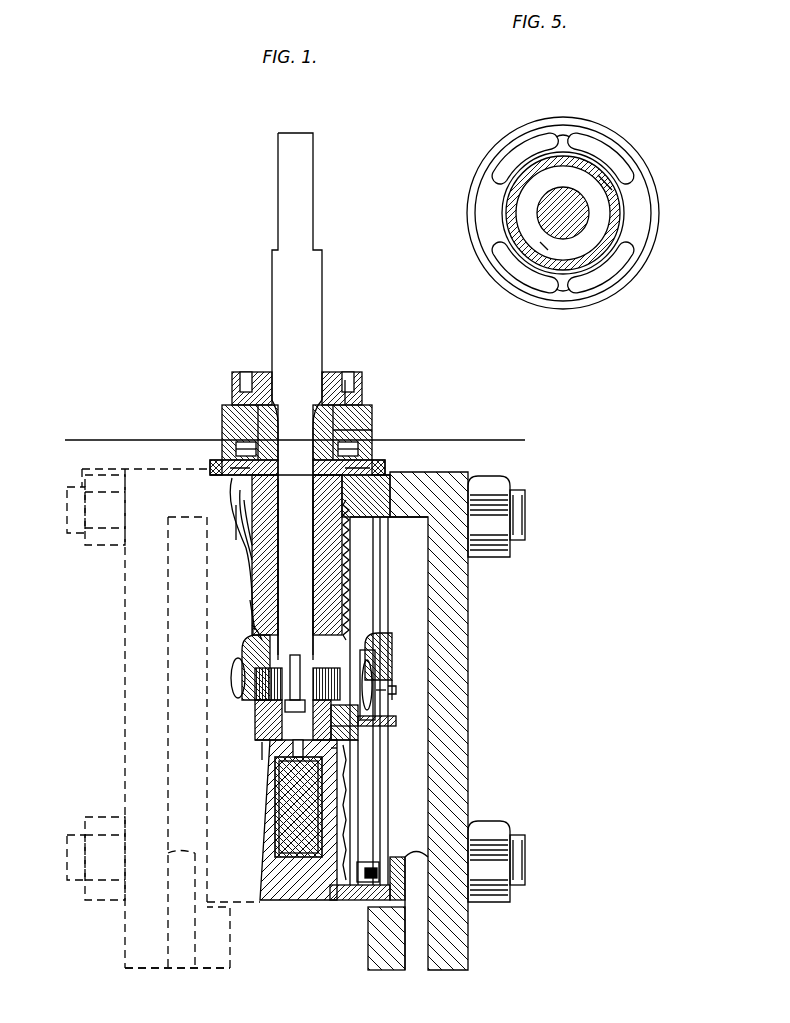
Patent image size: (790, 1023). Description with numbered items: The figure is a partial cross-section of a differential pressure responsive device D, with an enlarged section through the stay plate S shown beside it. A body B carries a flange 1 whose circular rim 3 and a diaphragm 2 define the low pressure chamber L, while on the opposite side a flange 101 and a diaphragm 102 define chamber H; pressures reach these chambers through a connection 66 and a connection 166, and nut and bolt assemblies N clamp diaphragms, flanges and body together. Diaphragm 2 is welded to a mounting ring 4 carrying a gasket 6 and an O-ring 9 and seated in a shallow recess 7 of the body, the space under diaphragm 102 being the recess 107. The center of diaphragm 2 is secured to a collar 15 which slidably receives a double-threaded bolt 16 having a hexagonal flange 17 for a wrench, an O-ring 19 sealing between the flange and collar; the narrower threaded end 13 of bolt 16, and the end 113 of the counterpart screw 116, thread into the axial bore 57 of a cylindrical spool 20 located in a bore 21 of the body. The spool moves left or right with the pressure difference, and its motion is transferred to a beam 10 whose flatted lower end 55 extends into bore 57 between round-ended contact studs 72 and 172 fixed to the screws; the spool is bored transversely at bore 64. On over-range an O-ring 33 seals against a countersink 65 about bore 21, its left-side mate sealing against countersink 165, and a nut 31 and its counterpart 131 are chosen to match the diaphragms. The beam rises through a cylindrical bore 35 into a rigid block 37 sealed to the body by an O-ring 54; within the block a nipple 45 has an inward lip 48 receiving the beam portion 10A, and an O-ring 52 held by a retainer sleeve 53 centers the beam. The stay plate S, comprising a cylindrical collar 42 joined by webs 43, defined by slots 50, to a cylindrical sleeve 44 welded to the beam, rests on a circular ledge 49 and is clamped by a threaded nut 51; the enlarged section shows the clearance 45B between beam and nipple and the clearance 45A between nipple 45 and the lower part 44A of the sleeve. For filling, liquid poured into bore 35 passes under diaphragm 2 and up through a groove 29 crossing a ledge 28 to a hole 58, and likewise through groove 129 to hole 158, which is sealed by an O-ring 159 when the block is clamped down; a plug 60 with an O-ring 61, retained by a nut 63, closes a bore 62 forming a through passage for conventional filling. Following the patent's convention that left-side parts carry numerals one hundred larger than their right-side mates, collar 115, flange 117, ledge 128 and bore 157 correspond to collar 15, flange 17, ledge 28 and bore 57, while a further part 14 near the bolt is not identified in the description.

In FIG. 1, the flange 1 is at (470, 630).
In FIG. 1, the diaphragm 2 is at (346, 580).
In FIG. 1, the rim 3 is at (418, 528).
In FIG. 1, the mounting ring 4 is at (378, 855).
In FIG. 1, the gasket 6 is at (385, 866).
In FIG. 1, the recess 7 is at (352, 600).
In FIG. 1, the O-ring 9 is at (365, 892).
In FIG. 1, the beam 10 is at (300, 277).
In FIG. 5, the beam portion 10A is at (545, 215).
In FIG. 1, the inner threaded end of bolt 13 is at (380, 714).
In FIG. 1, the ring 14 is at (403, 707).
In FIG. 1, the collar 15 is at (352, 722).
In FIG. 1, the double-threaded bolt 16 is at (392, 690).
In FIG. 1, the hexagonal flange 17 is at (374, 690).
In FIG. 1, the O-ring 19 is at (345, 632).
In FIG. 1, the spool 20 is at (258, 736).
In FIG. 1, the bore 21 is at (297, 807).
In FIG. 1, the ledge 28 is at (382, 527).
In FIG. 1, the groove 29 is at (328, 932).
In FIG. 1, the nut 31 is at (385, 650).
In FIG. 1, the O-ring 33 is at (383, 812).
In FIG. 1, the cylindrical bore 35 is at (282, 542).
In FIG. 1, the rigid block 37 is at (365, 432).
In FIG. 1, the cylindrical collar 42 is at (380, 460).
In FIG. 5, the cylindrical collar 42 is at (488, 166).
In FIG. 5, the webs 43 is at (565, 136).
In FIG. 1, the cylindrical sleeve 44 is at (378, 448).
In FIG. 5, the cylindrical lower part of sleeve 44A is at (612, 241).
In FIG. 1, the nipple 45 is at (232, 415).
In FIG. 5, the nipple 45 is at (601, 200).
In FIG. 5, the spacing between nipple and sleeve 45A is at (594, 172).
In FIG. 5, the spacing between beam and nipple 45B is at (548, 241).
In FIG. 1, the lip 48 is at (335, 378).
In FIG. 1, the circular ledge 49 is at (243, 462).
In FIG. 1, the slots 50 is at (240, 450).
In FIG. 5, the slots 50 is at (501, 152).
In FIG. 1, the threaded nut 51 is at (352, 396).
In FIG. 1, the O-ring 52 is at (258, 395).
In FIG. 1, the retainer sleeve 53 is at (292, 400).
In FIG. 1, the O-ring 54 is at (318, 490).
In FIG. 1, the flatted lower end of beam 55 is at (298, 655).
In FIG. 1, the axial end bore 57 is at (392, 468).
In FIG. 1, the hole 58 is at (400, 474).
In FIG. 1, the plug 60 is at (298, 807).
In FIG. 1, the O-ring 61 is at (352, 812).
In FIG. 1, the bore 62 is at (330, 755).
In FIG. 1, the nut 63 is at (298, 892).
In FIG. 1, the transverse bore of spool 64 is at (373, 748).
In FIG. 1, the countersink 65 is at (330, 600).
In FIG. 1, the connection 66 is at (450, 968).
In FIG. 1, the contact stud 72 is at (358, 708).
In FIG. 1, the flange 101 is at (125, 762).
In FIG. 1, the diaphragm 102 is at (238, 508).
In FIG. 1, the recess 107 is at (244, 556).
In FIG. 1, the inner threaded end of screw 113 is at (256, 705).
In FIG. 1, the valve block 115 is at (254, 718).
In FIG. 1, the screw 116 is at (253, 675).
In FIG. 1, the ring 117 is at (232, 676).
In FIG. 1, the piston lip 128 is at (240, 530).
In FIG. 1, the groove 129 is at (240, 498).
In FIG. 1, the nut 131 is at (220, 613).
In FIG. 1, the valve cap 157 is at (248, 647).
In FIG. 1, the hole 158 is at (213, 477).
In FIG. 1, the O-ring 159 is at (215, 462).
In FIG. 1, the countersink 165 is at (256, 623).
In FIG. 1, the connection 166 is at (140, 945).
In FIG. 1, the contact stud 172 is at (268, 762).
In FIG. 1, the body B is at (508, 430).
In FIG. 1, the differential pressure responsive device D is at (410, 340).
In FIG. 1, the chamber H is at (180, 598).
In FIG. 1, the low pressure chamber L is at (398, 573).
In FIG. 1, the nut and bolt assemblies N is at (508, 486).
In FIG. 1, the stay plate S is at (243, 370).
In FIG. 5, the stay plate S is at (515, 310).